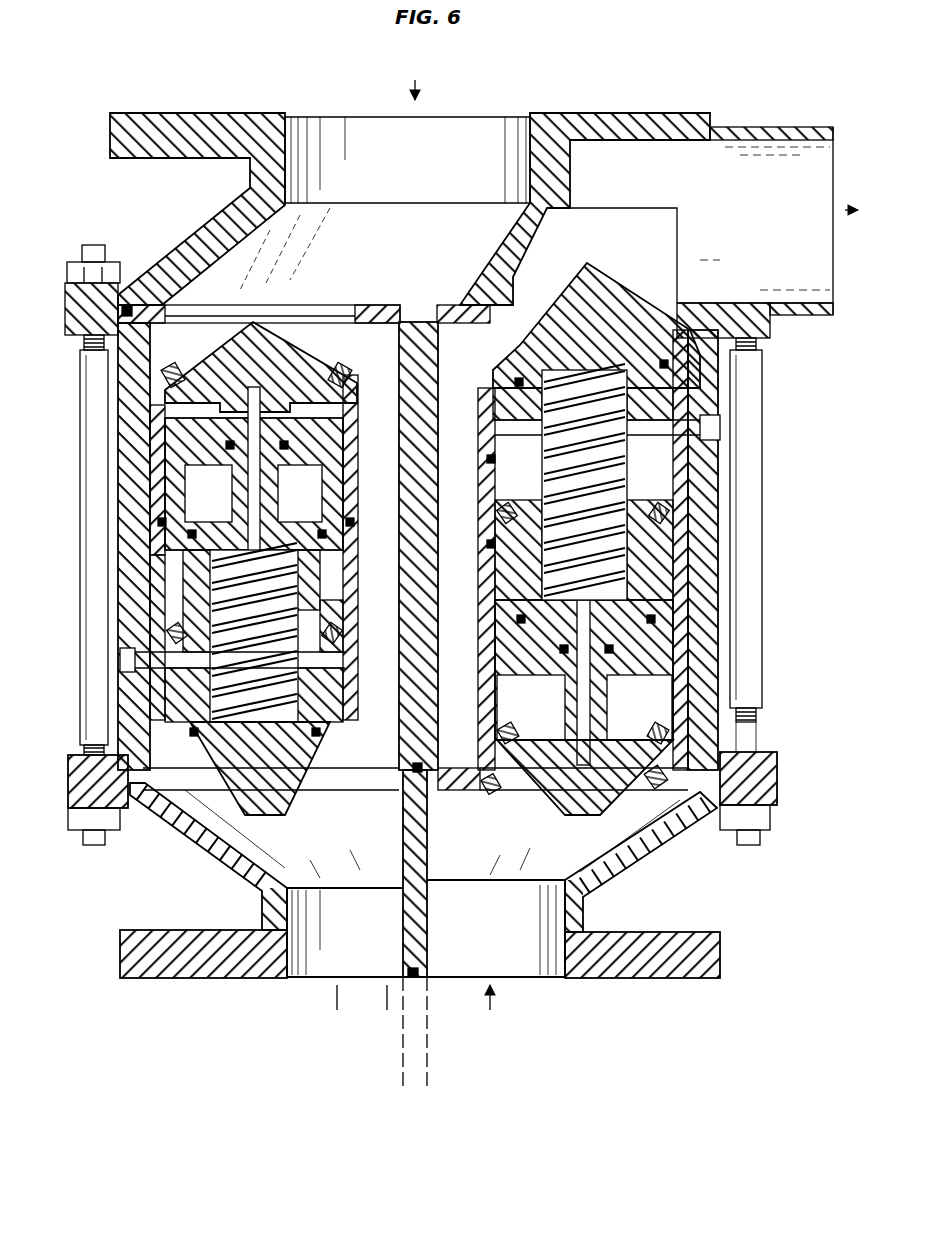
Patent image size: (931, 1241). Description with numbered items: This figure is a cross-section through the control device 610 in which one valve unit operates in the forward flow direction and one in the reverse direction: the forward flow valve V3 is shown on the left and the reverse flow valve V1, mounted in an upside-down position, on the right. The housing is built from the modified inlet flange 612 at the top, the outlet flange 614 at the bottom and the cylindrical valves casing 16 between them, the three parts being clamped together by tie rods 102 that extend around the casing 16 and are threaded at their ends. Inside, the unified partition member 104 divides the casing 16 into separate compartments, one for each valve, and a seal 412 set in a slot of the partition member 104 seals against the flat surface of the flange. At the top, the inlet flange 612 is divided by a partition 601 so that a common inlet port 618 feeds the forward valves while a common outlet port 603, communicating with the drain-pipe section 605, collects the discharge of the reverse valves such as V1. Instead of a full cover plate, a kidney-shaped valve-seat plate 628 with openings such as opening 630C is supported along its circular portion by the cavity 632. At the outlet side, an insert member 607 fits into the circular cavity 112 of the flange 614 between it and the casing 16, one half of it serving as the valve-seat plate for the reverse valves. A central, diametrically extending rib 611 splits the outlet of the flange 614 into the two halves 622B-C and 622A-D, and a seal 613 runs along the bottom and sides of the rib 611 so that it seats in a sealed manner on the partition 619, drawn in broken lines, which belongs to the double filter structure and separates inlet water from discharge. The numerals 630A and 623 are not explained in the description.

The device 610 is at (664, 88).
The inlet flange 612 is at (723, 102).
The drain-pipe section 605 is at (826, 158).
The common inlet port 618 is at (345, 137).
The partition 601 is at (537, 137).
The common outlet port 603 is at (672, 263).
The cavity 632 is at (128, 305).
The opening 630C is at (236, 312).
The kidney-shaped plate 628 is at (390, 311).
The tie rods 102 is at (742, 548).
The valves casing 16 is at (708, 636).
The partition member 104 is at (402, 668).
The seal 412 is at (421, 752).
The lower seat plate 630A is at (487, 792).
The rib 611 is at (428, 916).
The circular cavity 112 is at (698, 792).
The lower left flange 623 is at (125, 985).
The outlet flange 614 is at (707, 985).
The outlet half 622B-C is at (318, 975).
The insert member 607 is at (426, 943).
The seal 613 is at (413, 978).
The outlet half 622A-D is at (523, 975).
The partition 619 is at (412, 1043).
The valve V3 is at (74, 478).
The valve V1 is at (492, 378).